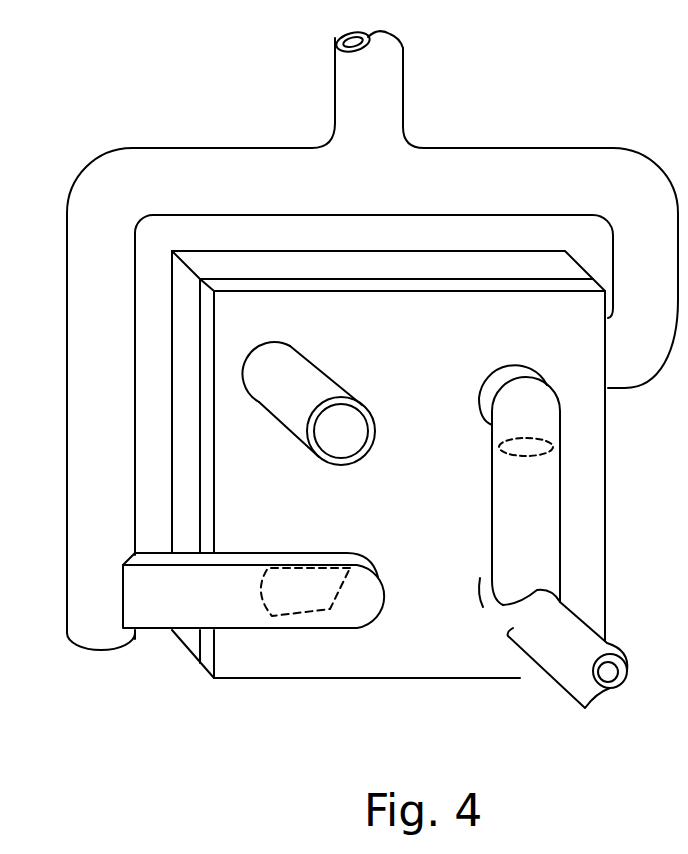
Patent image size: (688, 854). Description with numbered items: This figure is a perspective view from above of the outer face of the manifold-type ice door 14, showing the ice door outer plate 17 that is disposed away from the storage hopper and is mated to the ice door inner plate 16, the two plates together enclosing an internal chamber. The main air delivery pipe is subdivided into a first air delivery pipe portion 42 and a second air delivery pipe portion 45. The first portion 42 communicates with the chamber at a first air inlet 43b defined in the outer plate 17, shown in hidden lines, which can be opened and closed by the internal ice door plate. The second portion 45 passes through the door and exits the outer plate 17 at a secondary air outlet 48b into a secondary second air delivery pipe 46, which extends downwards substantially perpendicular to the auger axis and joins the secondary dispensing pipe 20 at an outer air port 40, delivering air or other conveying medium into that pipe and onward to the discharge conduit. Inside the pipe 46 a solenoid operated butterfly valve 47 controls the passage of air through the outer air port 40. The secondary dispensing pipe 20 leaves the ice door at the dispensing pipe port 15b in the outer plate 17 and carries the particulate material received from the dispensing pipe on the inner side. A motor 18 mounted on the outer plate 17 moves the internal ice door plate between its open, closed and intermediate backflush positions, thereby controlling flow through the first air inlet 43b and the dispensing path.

The ice door 14 is at (547, 279).
The dispensing pipe port 15b is at (475, 593).
The ice door inner plate 16 is at (228, 251).
The ice door outer plate 17 is at (248, 667).
The motor 18 is at (285, 398).
The secondary dispensing pipe 20 is at (483, 607).
The outer air port 40 is at (567, 603).
The first air delivery pipe portion 42 is at (0, 250).
The first air inlet 43b is at (333, 612).
The second air delivery pipe portion 45 is at (544, 160).
The secondary second air delivery pipe 46 is at (544, 507).
The solenoid operated butterfly valve 47 is at (529, 438).
The secondary air outlet 48b is at (479, 387).